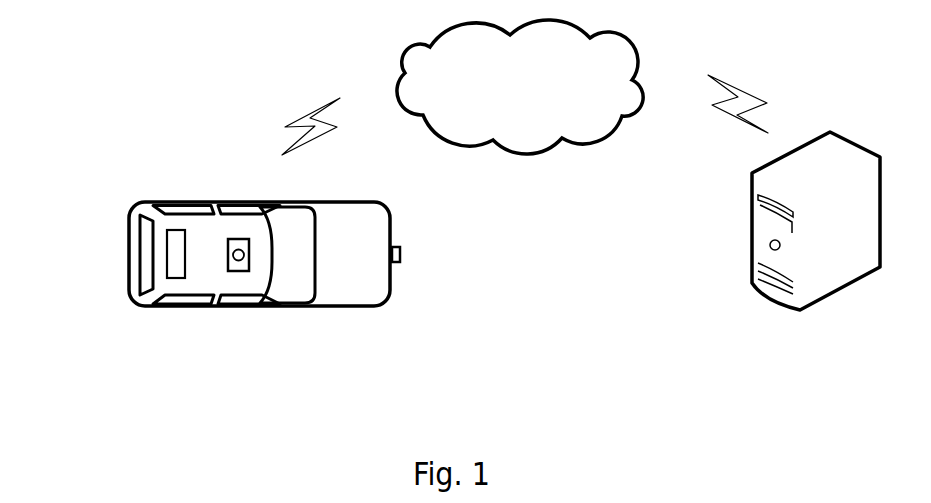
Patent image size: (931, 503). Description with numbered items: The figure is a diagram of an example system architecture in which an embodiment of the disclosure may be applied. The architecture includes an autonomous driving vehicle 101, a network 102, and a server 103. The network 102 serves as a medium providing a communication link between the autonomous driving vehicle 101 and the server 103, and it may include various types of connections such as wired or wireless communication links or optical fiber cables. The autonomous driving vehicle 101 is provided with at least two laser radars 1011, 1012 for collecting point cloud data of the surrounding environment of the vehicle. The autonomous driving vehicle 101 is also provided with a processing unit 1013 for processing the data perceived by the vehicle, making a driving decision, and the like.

The autonomous driving vehicle 101 is at (259, 280).
The laser radar 1011 is at (233, 267).
The laser radar 1012 is at (398, 263).
The processing unit 1013 is at (178, 270).
The network 102 is at (520, 87).
The server 103 is at (816, 244).